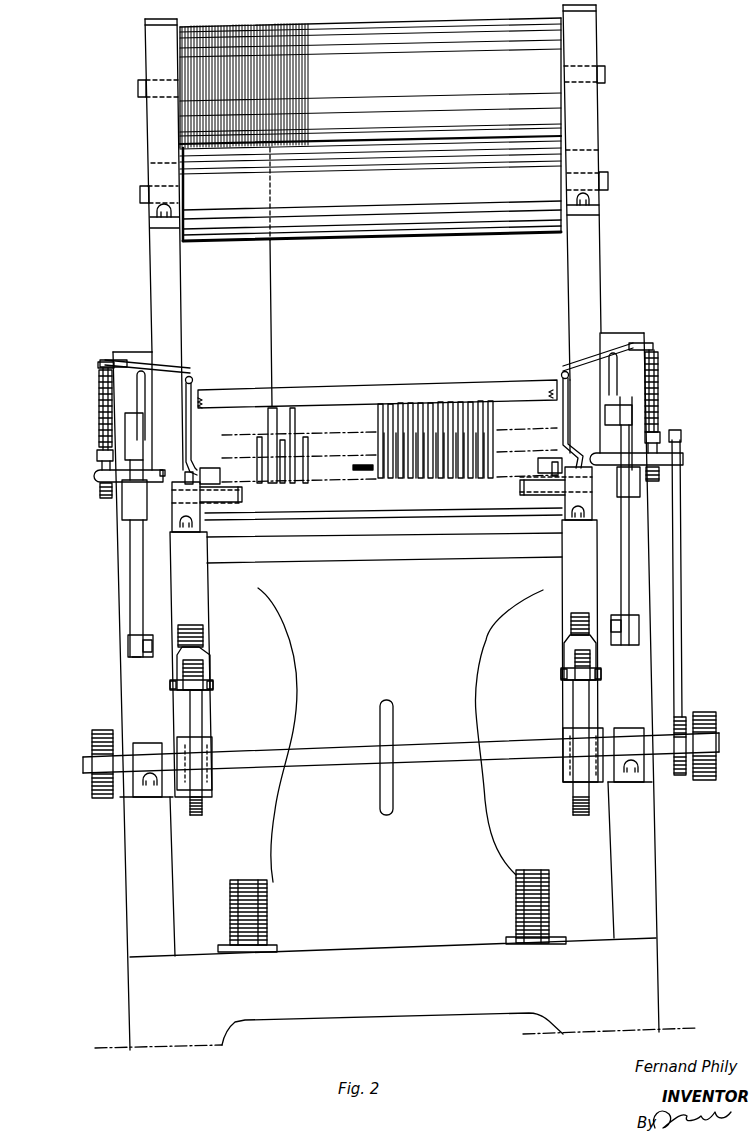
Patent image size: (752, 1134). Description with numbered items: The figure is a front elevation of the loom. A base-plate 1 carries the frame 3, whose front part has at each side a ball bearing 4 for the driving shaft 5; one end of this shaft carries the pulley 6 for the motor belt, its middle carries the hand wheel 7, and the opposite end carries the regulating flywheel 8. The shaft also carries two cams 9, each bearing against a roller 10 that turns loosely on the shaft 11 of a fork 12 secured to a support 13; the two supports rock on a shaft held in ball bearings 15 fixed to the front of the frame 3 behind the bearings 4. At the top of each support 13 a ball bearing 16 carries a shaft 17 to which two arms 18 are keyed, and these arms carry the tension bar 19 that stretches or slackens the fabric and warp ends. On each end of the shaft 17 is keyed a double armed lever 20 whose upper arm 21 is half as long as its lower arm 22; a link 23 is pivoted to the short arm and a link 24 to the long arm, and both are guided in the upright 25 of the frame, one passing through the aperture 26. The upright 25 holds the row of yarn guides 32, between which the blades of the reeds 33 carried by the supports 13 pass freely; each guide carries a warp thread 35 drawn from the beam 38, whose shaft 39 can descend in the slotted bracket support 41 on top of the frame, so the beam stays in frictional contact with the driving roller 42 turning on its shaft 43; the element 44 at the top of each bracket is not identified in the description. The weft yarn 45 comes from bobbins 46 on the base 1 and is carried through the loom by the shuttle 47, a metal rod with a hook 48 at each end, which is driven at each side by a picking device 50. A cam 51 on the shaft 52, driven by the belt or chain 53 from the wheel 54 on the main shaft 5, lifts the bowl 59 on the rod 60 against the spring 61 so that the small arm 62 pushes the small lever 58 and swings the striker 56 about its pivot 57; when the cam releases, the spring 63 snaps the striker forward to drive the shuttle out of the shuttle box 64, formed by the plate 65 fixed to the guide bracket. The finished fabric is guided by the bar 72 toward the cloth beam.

The base-plate 1 is at (205, 995).
The frame 3 is at (147, 905).
The ball bearing 4 is at (140, 768).
The driving shaft 5 is at (320, 760).
The pulley 6 is at (702, 780).
The hand wheel 7 is at (388, 816).
The regulating flywheel 8 is at (98, 800).
The cam 9 is at (196, 818).
The roller 10 is at (205, 673).
The shaft of fork 11 is at (214, 684).
The fork 12 is at (205, 648).
The support 13 is at (183, 592).
The ball bearing 15 is at (212, 745).
The ball bearing 16 is at (578, 510).
The shaft 17 is at (140, 555).
The arm 18 is at (245, 498).
The tension bar 19 is at (362, 522).
The double armed lever 20 is at (160, 503).
The upper arm 21 is at (133, 452).
The lower arm 22 is at (138, 650).
The link 23 is at (146, 402).
The link 24 is at (136, 658).
The upright 25 is at (176, 366).
The aperture 26 is at (120, 358).
The yarn guide 32 is at (326, 406).
The reed 33 is at (302, 406).
The warp thread 35 is at (274, 303).
The beam 38 is at (530, 118).
The shaft of beam 39 is at (138, 88).
The bracket support 41 is at (157, 142).
The driving roller 42 is at (205, 222).
The shaft of roller 43 is at (140, 200).
The caps 44 is at (152, 23).
The weft yarn 45 is at (300, 690).
The bobbin 46 is at (268, 916).
The shuttle 47 is at (368, 472).
The hook 48 is at (358, 472).
The picking device 50 is at (190, 446).
The cam 51 is at (104, 497).
The shaft 52 is at (97, 478).
The belt or chain 53 is at (683, 580).
The pulley or wheel 54 is at (685, 715).
The striker 56 is at (196, 474).
The pivot 57 is at (192, 380).
The small lever 58 is at (160, 372).
The bowl 59 is at (97, 456).
The vertically movable rod 60 is at (98, 400).
The spring 61 is at (99, 384).
The small arm 62 is at (104, 360).
The spring 63 is at (202, 400).
The shuttle box 64 is at (221, 474).
The plate 65 is at (684, 458).
The bar 72 is at (408, 552).